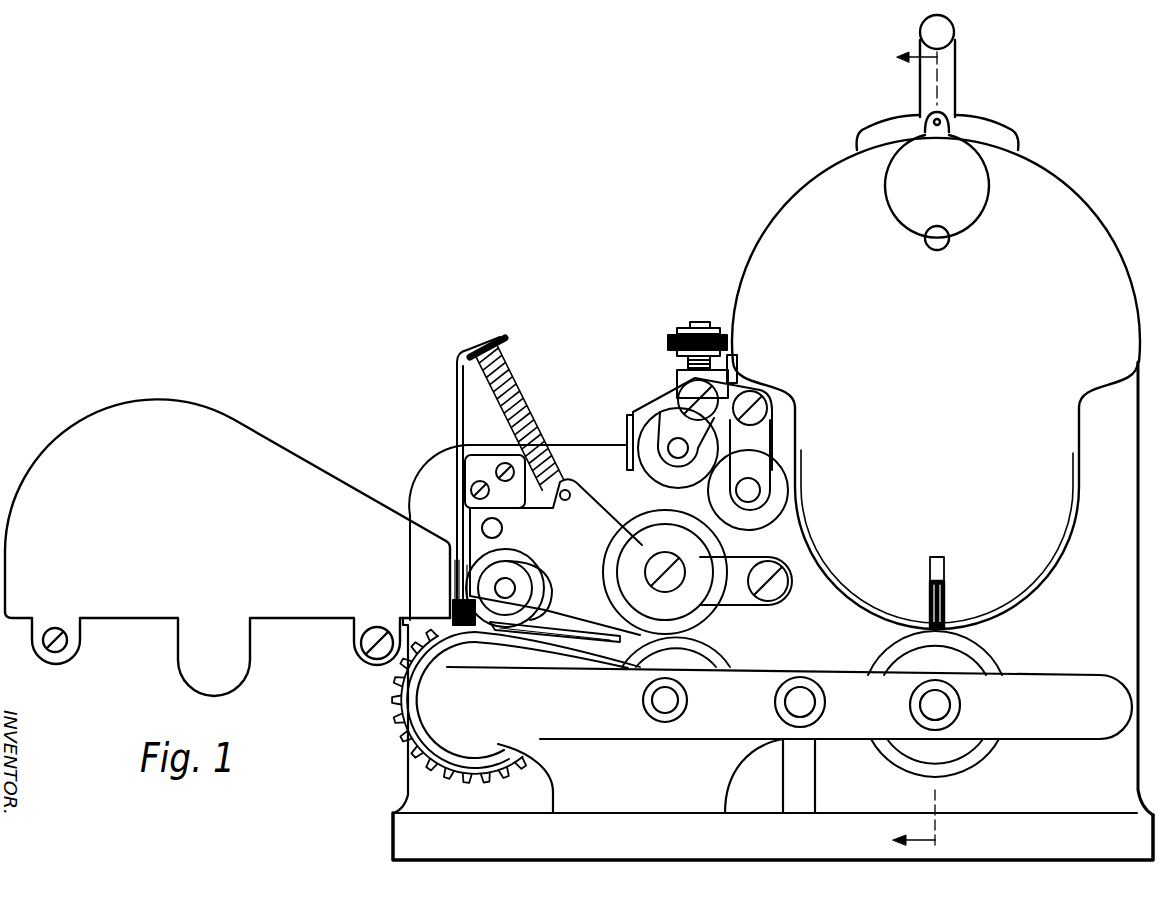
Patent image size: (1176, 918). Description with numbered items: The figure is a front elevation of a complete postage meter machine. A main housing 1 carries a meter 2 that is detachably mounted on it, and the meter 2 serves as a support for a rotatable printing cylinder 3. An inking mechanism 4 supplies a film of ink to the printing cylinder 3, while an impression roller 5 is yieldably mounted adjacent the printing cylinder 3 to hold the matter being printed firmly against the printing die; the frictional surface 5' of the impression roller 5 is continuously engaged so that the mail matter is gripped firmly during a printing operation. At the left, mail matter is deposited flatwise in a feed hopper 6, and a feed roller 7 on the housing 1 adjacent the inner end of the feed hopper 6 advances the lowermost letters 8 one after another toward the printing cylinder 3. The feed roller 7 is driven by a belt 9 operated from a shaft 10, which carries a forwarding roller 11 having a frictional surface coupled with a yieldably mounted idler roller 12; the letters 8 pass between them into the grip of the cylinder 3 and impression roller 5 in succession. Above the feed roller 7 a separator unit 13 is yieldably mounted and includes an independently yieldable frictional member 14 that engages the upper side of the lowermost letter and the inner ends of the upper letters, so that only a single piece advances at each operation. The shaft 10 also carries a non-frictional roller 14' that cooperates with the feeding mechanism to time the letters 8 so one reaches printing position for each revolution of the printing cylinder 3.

The main housing 1 is at (420, 796).
The meter 2 is at (848, 268).
The printing cylinder 3 is at (1076, 547).
The inking mechanism 4 is at (668, 408).
The impression roller 5 is at (947, 704).
The frictional surface 5' is at (972, 705).
The feed hopper 6 is at (297, 478).
The feed roller 7 is at (395, 688).
The mail matter 8 is at (567, 626).
The belt 9 is at (412, 715).
The shaft 10 is at (668, 702).
The forwarding roller 11 is at (720, 656).
The idler roller 12 is at (725, 556).
The separator unit 13 is at (563, 537).
The frictional member 14 is at (474, 588).
The non-frictional roller 14' is at (690, 641).